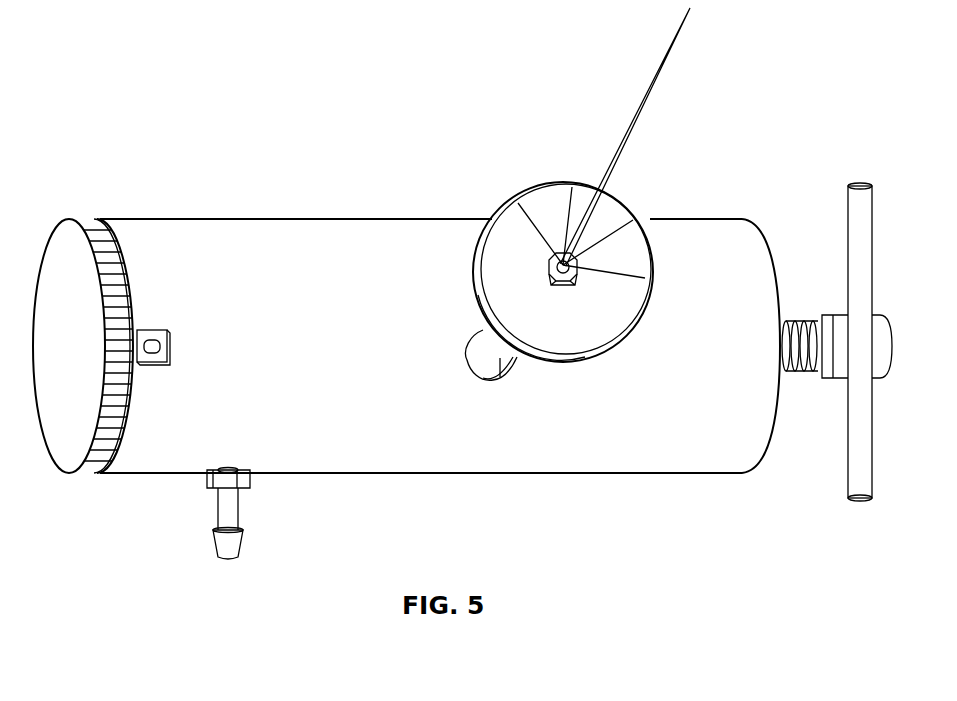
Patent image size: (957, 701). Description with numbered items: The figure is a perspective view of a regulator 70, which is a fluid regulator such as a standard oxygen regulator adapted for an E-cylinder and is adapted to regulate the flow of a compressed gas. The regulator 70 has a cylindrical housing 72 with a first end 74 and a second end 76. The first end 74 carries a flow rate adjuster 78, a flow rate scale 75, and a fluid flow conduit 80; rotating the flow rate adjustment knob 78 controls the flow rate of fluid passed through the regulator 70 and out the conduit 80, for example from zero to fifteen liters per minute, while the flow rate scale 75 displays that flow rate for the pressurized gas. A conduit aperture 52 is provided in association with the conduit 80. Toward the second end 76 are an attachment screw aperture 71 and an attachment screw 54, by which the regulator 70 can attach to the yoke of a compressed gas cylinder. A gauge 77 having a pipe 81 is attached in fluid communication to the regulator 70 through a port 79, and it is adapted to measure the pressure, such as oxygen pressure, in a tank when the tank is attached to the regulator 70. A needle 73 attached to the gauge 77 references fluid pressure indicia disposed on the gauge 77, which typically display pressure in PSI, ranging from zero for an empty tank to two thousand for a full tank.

The regulator 70 is at (368, 197).
The housing 72 is at (413, 473).
The first end 74 is at (86, 213).
The flow rate adjuster 78 is at (68, 234).
The flow rate scale 75 is at (150, 330).
The second end 76 is at (773, 232).
The gauge 77 is at (568, 363).
The needle 73 is at (638, 100).
The port 79 is at (495, 378).
The pipe 81 is at (500, 378).
The fluid flow conduit 80 is at (242, 545).
The conduit aperture 52 is at (205, 468).
The attachment screw aperture 71 is at (805, 372).
The attachment screw 54 is at (840, 325).